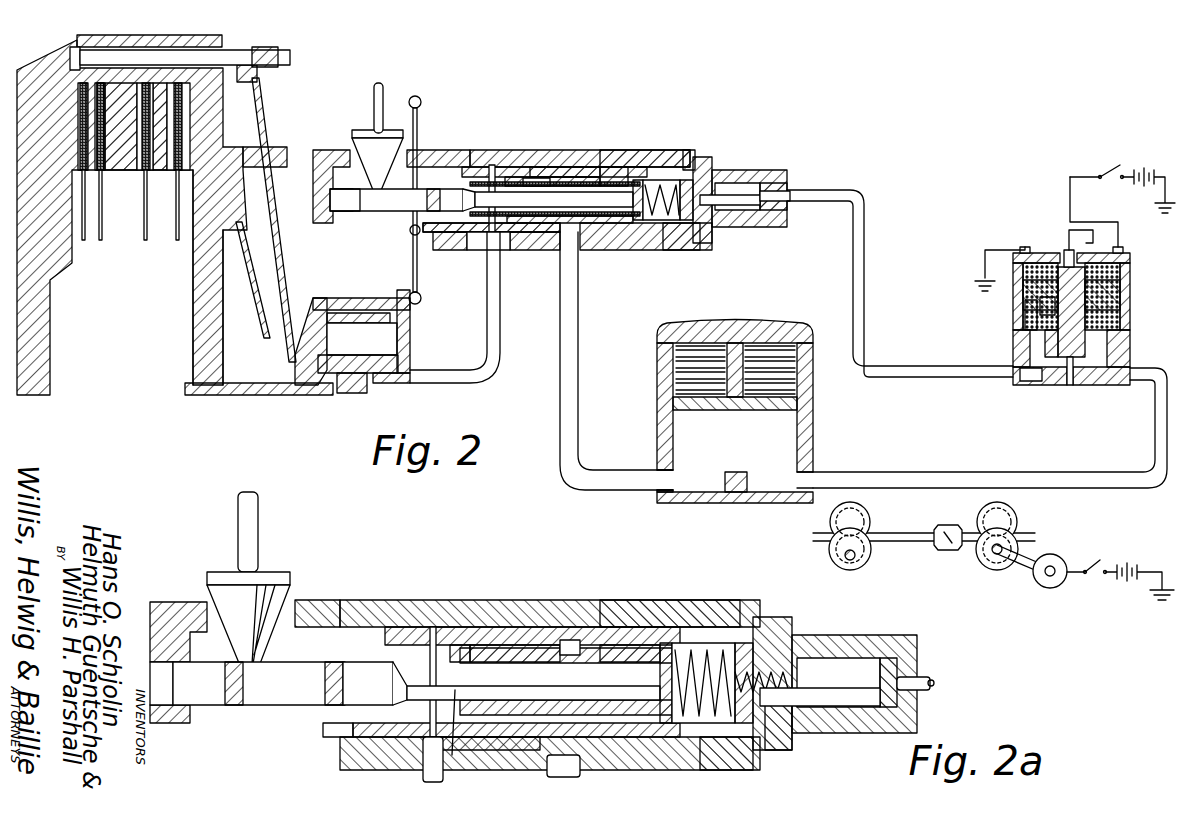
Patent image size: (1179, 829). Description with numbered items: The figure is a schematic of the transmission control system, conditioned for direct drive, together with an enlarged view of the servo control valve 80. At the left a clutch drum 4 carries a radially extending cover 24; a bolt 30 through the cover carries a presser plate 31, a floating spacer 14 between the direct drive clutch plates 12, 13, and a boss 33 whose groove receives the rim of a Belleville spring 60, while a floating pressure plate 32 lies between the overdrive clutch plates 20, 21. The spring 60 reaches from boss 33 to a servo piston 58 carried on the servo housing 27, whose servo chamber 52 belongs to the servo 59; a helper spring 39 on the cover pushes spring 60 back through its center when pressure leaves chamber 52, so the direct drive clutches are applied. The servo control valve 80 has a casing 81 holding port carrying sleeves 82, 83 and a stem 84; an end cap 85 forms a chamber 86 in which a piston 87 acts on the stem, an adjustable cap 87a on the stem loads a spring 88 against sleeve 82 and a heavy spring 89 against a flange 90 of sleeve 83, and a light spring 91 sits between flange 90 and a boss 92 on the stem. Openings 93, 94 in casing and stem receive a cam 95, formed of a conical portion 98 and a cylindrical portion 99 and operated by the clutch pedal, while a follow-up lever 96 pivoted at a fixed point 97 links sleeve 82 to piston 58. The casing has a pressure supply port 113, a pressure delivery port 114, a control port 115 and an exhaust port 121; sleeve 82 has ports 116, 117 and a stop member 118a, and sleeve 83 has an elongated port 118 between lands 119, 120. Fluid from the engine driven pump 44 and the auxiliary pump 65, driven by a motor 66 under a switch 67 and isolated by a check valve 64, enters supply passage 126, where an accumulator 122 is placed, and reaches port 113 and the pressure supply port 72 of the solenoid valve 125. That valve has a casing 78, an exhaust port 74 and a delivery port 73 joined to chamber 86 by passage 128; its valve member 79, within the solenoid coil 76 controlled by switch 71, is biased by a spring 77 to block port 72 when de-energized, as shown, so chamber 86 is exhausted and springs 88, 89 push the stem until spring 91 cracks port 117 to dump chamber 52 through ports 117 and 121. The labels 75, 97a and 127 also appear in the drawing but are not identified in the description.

In FIG. 2, the clutch drum 4 is at (50, 268).
In FIG. 2, the clutch plate 12 is at (84, 240).
In FIG. 2, the clutch plate 13 is at (101, 240).
In FIG. 2, the floating spacer member 14 is at (99, 170).
In FIG. 2, the clutch plate 20 is at (146, 240).
In FIG. 2, the clutch plate 21 is at (177, 240).
In FIG. 2, the cover 24 is at (193, 293).
In FIG. 2, the servo housing 27 is at (395, 320).
In FIG. 2, the bolt 30 is at (266, 47).
In FIG. 2, the presser plate 31 is at (128, 155).
In FIG. 2, the pressure plate 32 is at (160, 160).
In FIG. 2, the boss 33 is at (222, 42).
In FIG. 2, the helper spring 39 is at (262, 325).
In FIG. 2, the gear pump 44 is at (830, 520).
In FIG. 2, the servo chamber 52 is at (380, 345).
In FIG. 2, the servo piston 58 is at (318, 298).
In FIG. 2, the servo 59 is at (345, 298).
In FIG. 2, the Belleville spring member 60 is at (280, 235).
In FIG. 2, the check valve 64 is at (938, 545).
In FIG. 2, the auxiliary pump 65 is at (1017, 515).
In FIG. 2, the motor 66 is at (1058, 561).
In FIG. 2, the switch 67 is at (1105, 563).
In FIG. 2, the switch 71 is at (1108, 168).
In FIG. 2, the pressure supply port 72 is at (1071, 385).
In FIG. 2, the pressure delivery port 73 is at (1035, 385).
In FIG. 2, the exhaust port 74 is at (1064, 254).
In FIG. 2, the heating element 75 is at (1050, 303).
In FIG. 2, the solenoid coil 76 is at (1040, 320).
In FIG. 2, the spring 77 is at (1045, 350).
In FIG. 2, the casing 78 is at (1120, 306).
In FIG. 2, the valve member 79 is at (1085, 290).
In FIG. 2, the servo control valve 80 is at (460, 150).
In FIG. 2A, the servo control valve 80 is at (325, 600).
In FIG. 2, the casing 81 is at (640, 155).
In FIG. 2A, the casing 81 is at (630, 605).
In FIG. 2, the port carrying sleeve 82 is at (470, 167).
In FIG. 2A, the port carrying sleeve 82 is at (393, 630).
In FIG. 2, the port carrying sleeve 83 is at (590, 183).
In FIG. 2A, the port carrying sleeve 83 is at (535, 660).
In FIG. 2, the stem member 84 is at (458, 212).
In FIG. 2A, the stem member 84 is at (360, 665).
In FIG. 2, the end cap 85 is at (755, 170).
In FIG. 2, the chamber 86 is at (787, 184).
In FIG. 2A, the chamber 86 is at (886, 733).
In FIG. 2, the piston 87 is at (750, 210).
In FIG. 2A, the piston 87 is at (850, 706).
In FIG. 2, the cap 87a is at (700, 250).
In FIG. 2A, the cap 87a is at (770, 730).
In FIG. 2, the spring 88 is at (685, 158).
In FIG. 2A, the spring 88 is at (722, 760).
In FIG. 2, the heavy spring 89 is at (703, 158).
In FIG. 2A, the heavy spring 89 is at (760, 618).
In FIG. 2, the flange 90 is at (682, 222).
In FIG. 2A, the flange 90 is at (738, 643).
In FIG. 2, the light spring 91 is at (656, 222).
In FIG. 2A, the light spring 91 is at (690, 643).
In FIG. 2, the boss 92 is at (638, 222).
In FIG. 2A, the boss 92 is at (665, 643).
In FIG. 2, the casing opening 93 is at (430, 150).
In FIG. 2A, the casing opening 93 is at (300, 600).
In FIG. 2, the stem opening 94 is at (382, 211).
In FIG. 2A, the stem opening 94 is at (280, 706).
In FIG. 2, the cam 95 is at (374, 90).
In FIG. 2A, the cam 95 is at (236, 525).
In FIG. 2, the follow-up lever 96 is at (422, 291).
In FIG. 2, the fixed point 97 is at (416, 96).
In FIG. 2, the guide 97a is at (410, 233).
In FIG. 2, the conical portion 98 is at (357, 146).
In FIG. 2A, the conical portion 98 is at (223, 595).
In FIG. 2, the cylindrical portion 99 is at (365, 132).
In FIG. 2A, the cylindrical portion 99 is at (285, 575).
In FIG. 2, the pressure supply port 113 is at (588, 250).
In FIG. 2A, the pressure supply port 113 is at (590, 770).
In FIG. 2, the pressure delivery port 114 is at (506, 252).
In FIG. 2A, the pressure delivery port 114 is at (423, 762).
In FIG. 2, the control port 115 is at (790, 203).
In FIG. 2A, the control port 115 is at (925, 692).
In FIG. 2, the port 116 is at (555, 182).
In FIG. 2A, the port 116 is at (568, 645).
In FIG. 2, the port 117 is at (520, 178).
In FIG. 2A, the port 117 is at (470, 745).
In FIG. 2, the elongated port 118 is at (545, 170).
In FIG. 2A, the elongated port 118 is at (505, 650).
In FIG. 2, the stop member 118a is at (493, 166).
In FIG. 2A, the stop member 118a is at (432, 628).
In FIG. 2, the land 119 is at (524, 250).
In FIG. 2A, the land 119 is at (462, 648).
In FIG. 2, the land 120 is at (610, 170).
In FIG. 2A, the land 120 is at (610, 650).
In FIG. 2, the exhaust port 121 is at (433, 213).
In FIG. 2A, the exhaust port 121 is at (350, 710).
In FIG. 2, the accumulator 122 is at (813, 440).
In FIG. 2, the solenoid valve 125 is at (1130, 344).
In FIG. 2, the pressure supply passage 126 is at (578, 383).
In FIG. 2A, the pressure supply passage 126 is at (547, 770).
In FIG. 2, the conduit 127 is at (500, 331).
In FIG. 2A, the conduit 127 is at (457, 712).
In FIG. 2, the passage 128 is at (864, 242).
In FIG. 2A, the passage 128 is at (937, 684).